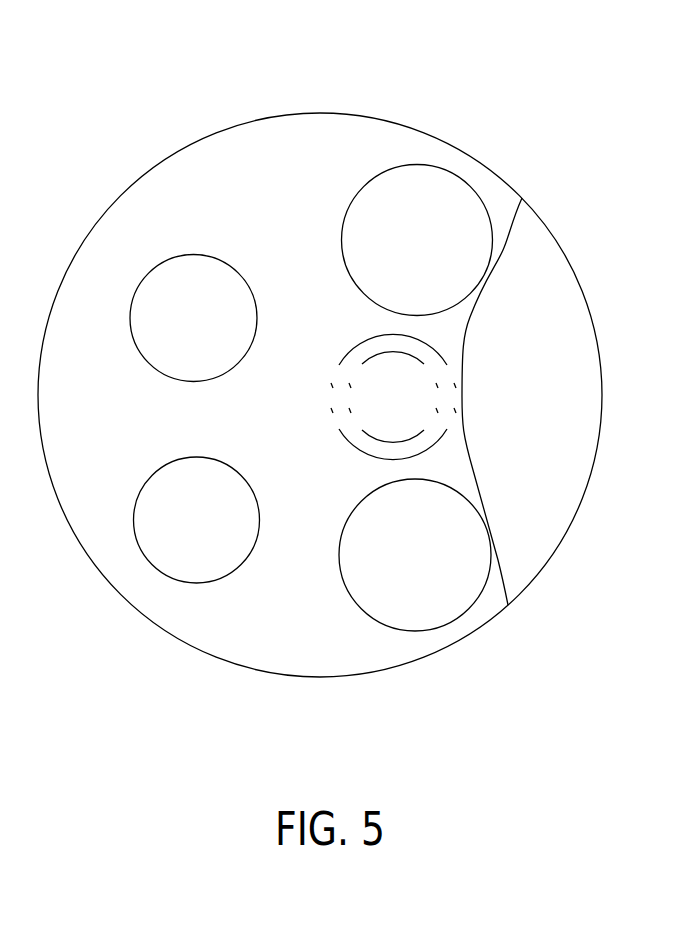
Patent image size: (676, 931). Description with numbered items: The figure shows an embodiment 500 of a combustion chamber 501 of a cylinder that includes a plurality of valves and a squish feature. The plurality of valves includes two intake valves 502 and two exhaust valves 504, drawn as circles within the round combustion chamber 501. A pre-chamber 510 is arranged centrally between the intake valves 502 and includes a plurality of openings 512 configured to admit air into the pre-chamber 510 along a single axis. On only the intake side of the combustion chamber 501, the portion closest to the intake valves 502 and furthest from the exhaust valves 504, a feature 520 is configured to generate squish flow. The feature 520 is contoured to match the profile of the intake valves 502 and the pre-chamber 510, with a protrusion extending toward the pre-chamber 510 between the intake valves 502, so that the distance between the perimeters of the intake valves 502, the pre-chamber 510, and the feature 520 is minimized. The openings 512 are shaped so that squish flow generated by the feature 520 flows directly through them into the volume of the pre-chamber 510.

The embodiment 500 is at (486, 94).
The combustion chamber 501 is at (326, 309).
The intake valves 502 is at (444, 256).
The exhaust valves 504 is at (210, 329).
The pre-chamber 510 is at (353, 448).
The plurality of openings 512 is at (331, 409).
The feature 520 is at (554, 411).